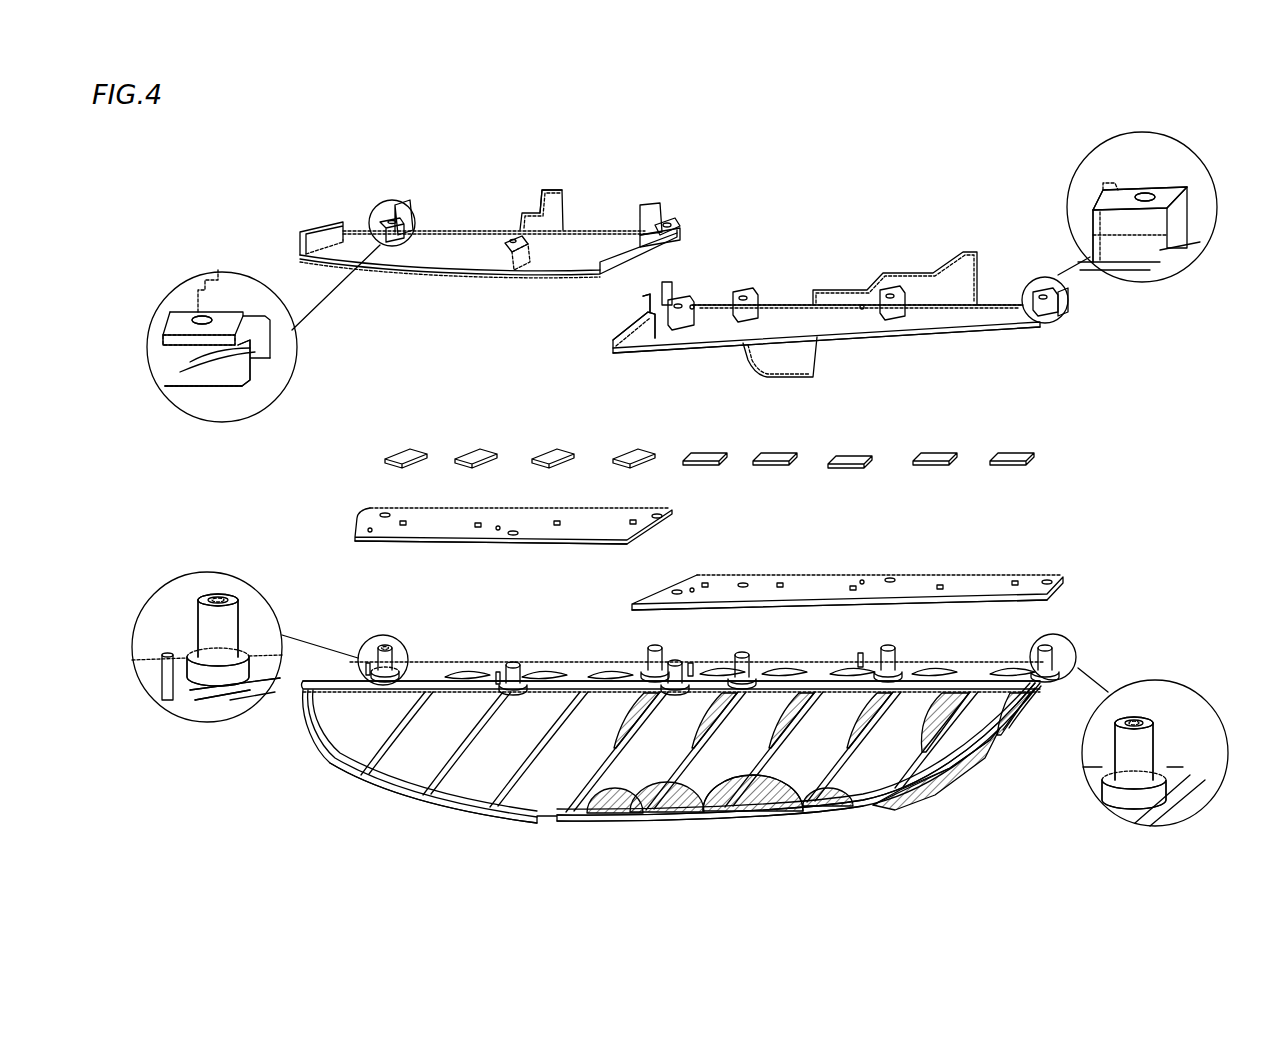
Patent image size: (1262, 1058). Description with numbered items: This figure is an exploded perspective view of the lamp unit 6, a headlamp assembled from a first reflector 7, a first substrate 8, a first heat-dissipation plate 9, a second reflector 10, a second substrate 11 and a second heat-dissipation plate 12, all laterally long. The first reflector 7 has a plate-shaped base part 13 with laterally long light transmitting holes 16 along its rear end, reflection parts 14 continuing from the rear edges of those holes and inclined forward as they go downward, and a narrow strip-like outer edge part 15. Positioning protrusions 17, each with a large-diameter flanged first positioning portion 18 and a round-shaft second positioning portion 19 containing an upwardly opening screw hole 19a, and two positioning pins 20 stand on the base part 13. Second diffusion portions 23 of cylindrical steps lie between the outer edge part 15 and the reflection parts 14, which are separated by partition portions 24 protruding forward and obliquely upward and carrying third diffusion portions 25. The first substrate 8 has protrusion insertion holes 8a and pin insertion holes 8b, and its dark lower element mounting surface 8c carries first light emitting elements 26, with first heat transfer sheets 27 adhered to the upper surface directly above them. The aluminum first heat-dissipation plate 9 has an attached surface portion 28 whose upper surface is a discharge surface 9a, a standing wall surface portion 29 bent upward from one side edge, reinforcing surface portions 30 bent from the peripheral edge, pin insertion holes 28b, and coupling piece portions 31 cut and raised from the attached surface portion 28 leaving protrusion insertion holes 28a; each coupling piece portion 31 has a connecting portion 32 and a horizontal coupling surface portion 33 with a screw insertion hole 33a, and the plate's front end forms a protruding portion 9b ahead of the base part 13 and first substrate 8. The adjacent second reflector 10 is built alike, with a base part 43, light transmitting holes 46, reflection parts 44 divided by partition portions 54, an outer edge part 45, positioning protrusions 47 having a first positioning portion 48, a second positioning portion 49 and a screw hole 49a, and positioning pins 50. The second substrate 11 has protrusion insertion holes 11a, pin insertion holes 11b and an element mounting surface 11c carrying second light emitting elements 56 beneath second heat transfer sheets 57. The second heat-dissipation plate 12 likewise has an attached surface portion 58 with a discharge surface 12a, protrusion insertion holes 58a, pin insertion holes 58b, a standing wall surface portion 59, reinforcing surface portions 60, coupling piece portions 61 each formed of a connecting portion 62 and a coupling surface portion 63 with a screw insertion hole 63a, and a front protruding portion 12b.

The lamp unit 6 is at (250, 165).
The first reflector 7 is at (995, 760).
The first substrate 8 is at (918, 575).
The protrusion insertion holes 8a is at (675, 591).
The pin insertion holes 8b is at (692, 588).
The element mounting surface 8c is at (778, 602).
The first heat-dissipation plate 9 is at (990, 305).
The discharge surface 9a is at (835, 318).
The protruding portion 9b is at (690, 345).
The second reflector 10 is at (674, 753).
The second substrate 11 is at (600, 510).
The protrusion insertion holes 11a is at (385, 513).
The pin insertion holes 11b is at (368, 528).
The element mounting surface 11c is at (585, 535).
The second heat-dissipation plate 12 is at (600, 238).
The discharge surface 12a is at (615, 232).
The protruding portion 12b is at (440, 272).
The base part 13 is at (960, 668).
The reflection parts 14 is at (1005, 715).
The outer edge part 15 is at (790, 818).
The light transmitting holes 16 is at (720, 675).
The positioning protrusions 17 is at (675, 663).
The first positioning portion 18 is at (1125, 797).
The second positioning portion 19 is at (1150, 755).
The screw hole 19a is at (1134, 720).
The positioning pins 20 is at (690, 663).
The second diffusion portions 23 is at (960, 760).
The partition portions 24 is at (600, 810).
The third diffusion portions 25 is at (705, 705).
The first light emitting elements 26 is at (705, 583).
The first heat transfer sheets 27 is at (705, 455).
The attached surface portion 28 is at (800, 315).
The protrusion insertion holes 28a is at (640, 340).
The pin insertion holes 28b is at (692, 305).
The standing wall surface portion 29 is at (645, 312).
The reinforcing surface portions 30 is at (975, 253).
The coupling piece portions 31 is at (740, 290).
The connecting portion 32 is at (1085, 222).
The coupling surface portion 33 is at (1175, 190).
The screw insertion hole 33a is at (1145, 197).
The base part 43 is at (195, 715).
The reflection parts 44 is at (335, 720).
The outer edge part 45 is at (430, 800).
The light transmitting holes 46 is at (465, 675).
The positioning protrusions 47 is at (232, 608).
The first positioning portion 48 is at (240, 660).
The second positioning portion 49 is at (236, 620).
The screw hole 49a is at (218, 597).
The positioning pins 50 is at (165, 655).
The partition portions 54 is at (335, 772).
The second light emitting elements 56 is at (403, 527).
The second heat transfer sheets 57 is at (400, 450).
The attached surface portion 58 is at (480, 235).
The protrusion insertion holes 58a is at (355, 233).
The pin insertion holes 58b is at (340, 262).
The standing wall surface portion 59 is at (685, 240).
The reinforcing surface portions 60 is at (410, 200).
The coupling piece portions 61 is at (385, 215).
The connecting portion 62 is at (200, 370).
The coupling surface portion 63 is at (170, 340).
The screw insertion hole 63a is at (205, 320).